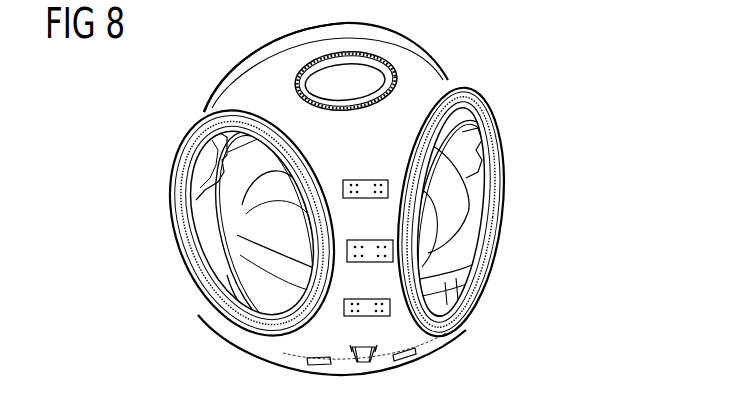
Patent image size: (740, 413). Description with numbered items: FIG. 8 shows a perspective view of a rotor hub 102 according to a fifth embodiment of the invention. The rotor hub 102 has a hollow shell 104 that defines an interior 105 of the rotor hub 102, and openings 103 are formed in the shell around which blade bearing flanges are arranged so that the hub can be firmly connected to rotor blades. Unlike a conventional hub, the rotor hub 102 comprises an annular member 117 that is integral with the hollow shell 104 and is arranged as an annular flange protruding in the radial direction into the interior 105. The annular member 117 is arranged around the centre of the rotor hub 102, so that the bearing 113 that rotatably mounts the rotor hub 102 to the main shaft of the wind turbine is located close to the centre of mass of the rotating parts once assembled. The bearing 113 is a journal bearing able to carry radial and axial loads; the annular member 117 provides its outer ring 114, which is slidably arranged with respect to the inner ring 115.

The rotor hub 102 is at (465, 70).
The openings 103 is at (265, 305).
The hollow shell 104 is at (243, 97).
The interior 105 is at (300, 205).
The bearing 113 is at (490, 200).
The outer ring 114 is at (453, 250).
The inner ring 115 is at (448, 220).
The annular member 117 is at (453, 250).